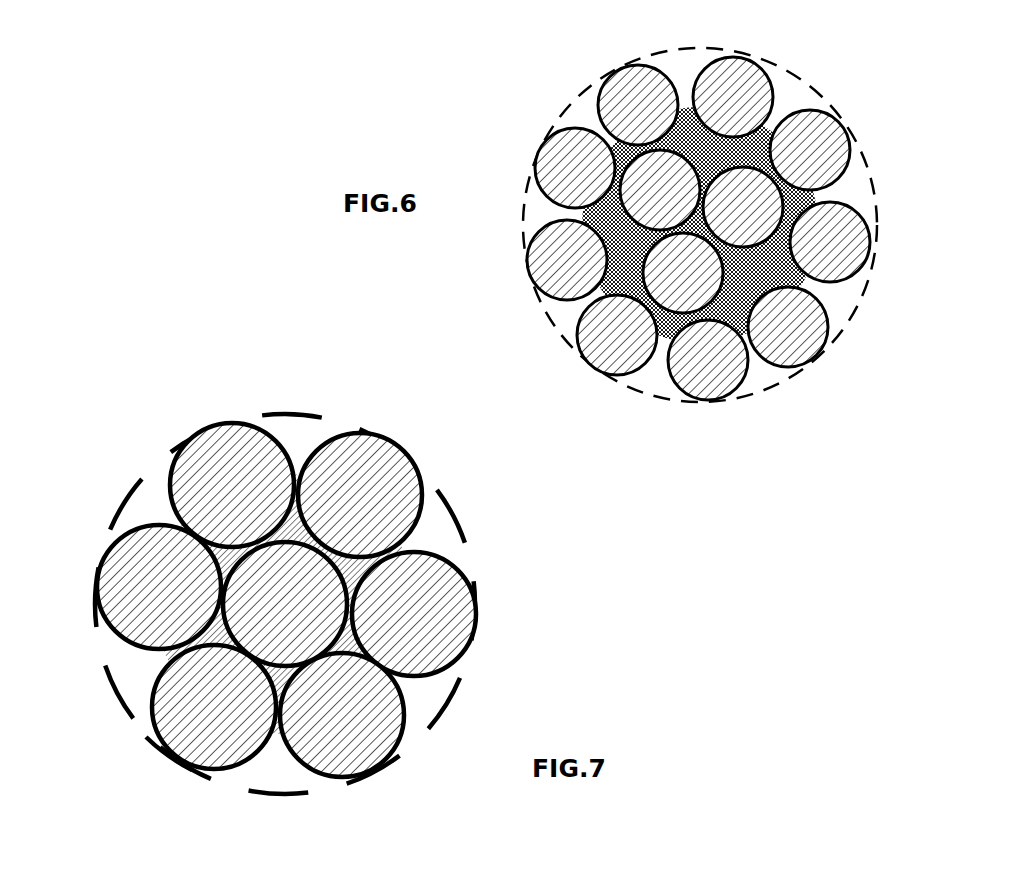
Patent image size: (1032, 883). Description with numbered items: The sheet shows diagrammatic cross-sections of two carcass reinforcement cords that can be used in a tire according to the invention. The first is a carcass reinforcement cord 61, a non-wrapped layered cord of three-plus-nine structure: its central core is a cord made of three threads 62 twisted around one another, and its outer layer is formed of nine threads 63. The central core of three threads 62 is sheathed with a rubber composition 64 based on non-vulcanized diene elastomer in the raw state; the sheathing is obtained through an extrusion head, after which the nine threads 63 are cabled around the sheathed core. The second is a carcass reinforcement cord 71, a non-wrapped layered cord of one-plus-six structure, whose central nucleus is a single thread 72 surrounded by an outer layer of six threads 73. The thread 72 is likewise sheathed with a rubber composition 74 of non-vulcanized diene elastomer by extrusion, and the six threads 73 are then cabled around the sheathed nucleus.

In FIG. 6, the carcass reinforcement cord 61 is at (570, 108).
In FIG. 6, the threads 62 is at (768, 195).
In FIG. 6, the threads 63 is at (748, 80).
In FIG. 6, the rubber composition 64 is at (607, 250).
In FIG. 7, the carcass reinforcement cord 71 is at (283, 410).
In FIG. 7, the thread 72 is at (280, 637).
In FIG. 7, the threads 73 is at (158, 550).
In FIG. 7, the rubber composition 74 is at (162, 738).